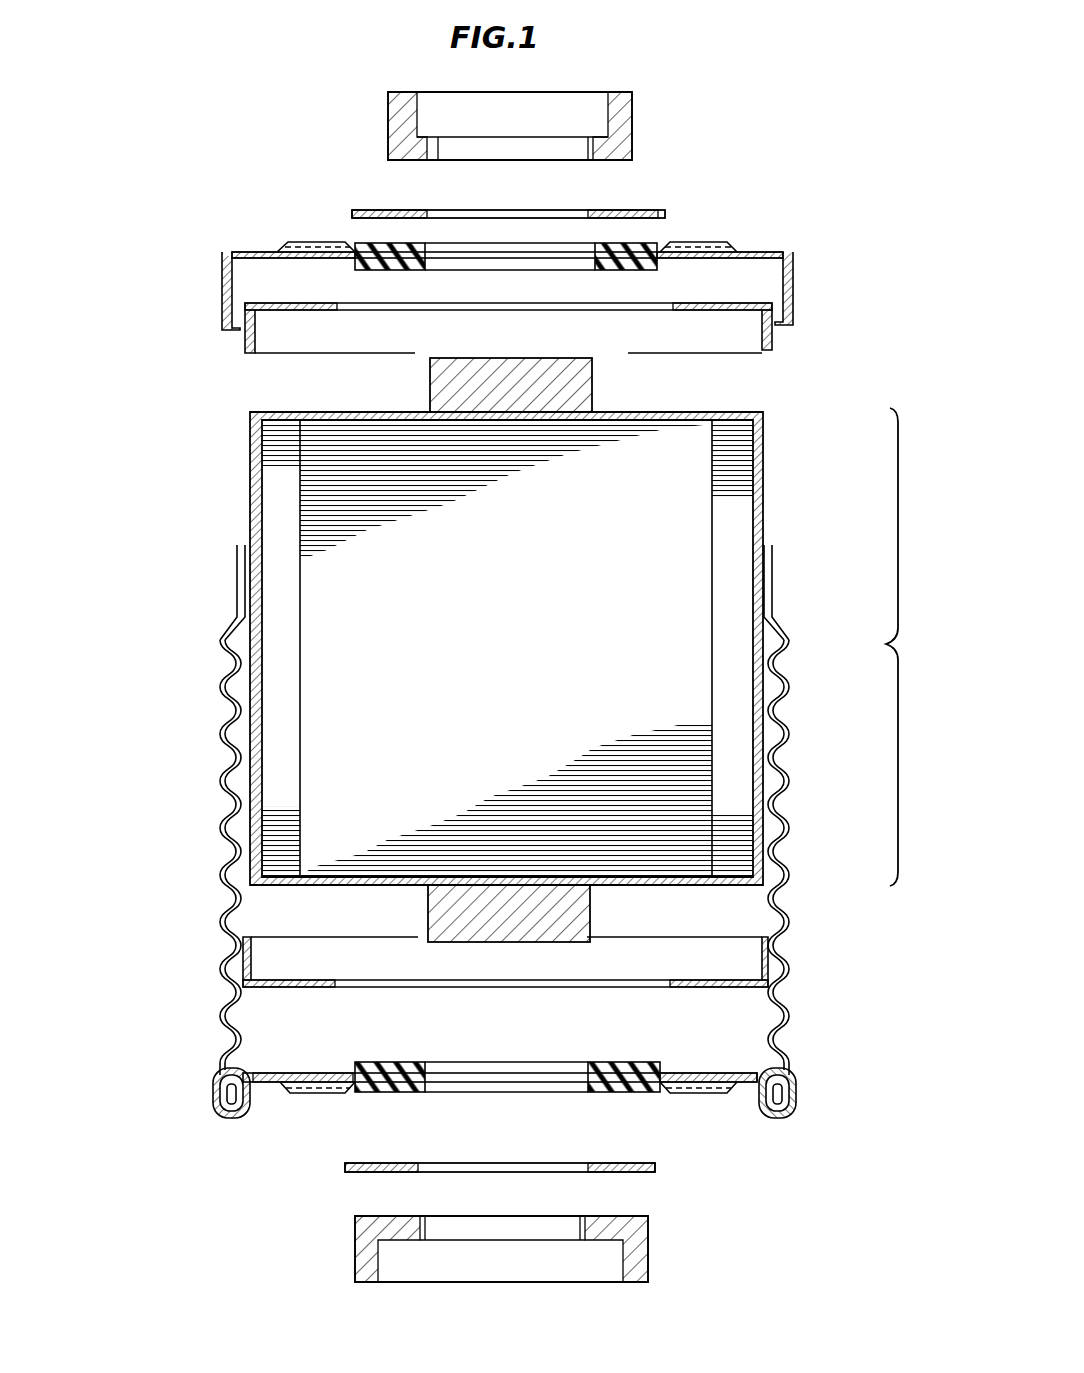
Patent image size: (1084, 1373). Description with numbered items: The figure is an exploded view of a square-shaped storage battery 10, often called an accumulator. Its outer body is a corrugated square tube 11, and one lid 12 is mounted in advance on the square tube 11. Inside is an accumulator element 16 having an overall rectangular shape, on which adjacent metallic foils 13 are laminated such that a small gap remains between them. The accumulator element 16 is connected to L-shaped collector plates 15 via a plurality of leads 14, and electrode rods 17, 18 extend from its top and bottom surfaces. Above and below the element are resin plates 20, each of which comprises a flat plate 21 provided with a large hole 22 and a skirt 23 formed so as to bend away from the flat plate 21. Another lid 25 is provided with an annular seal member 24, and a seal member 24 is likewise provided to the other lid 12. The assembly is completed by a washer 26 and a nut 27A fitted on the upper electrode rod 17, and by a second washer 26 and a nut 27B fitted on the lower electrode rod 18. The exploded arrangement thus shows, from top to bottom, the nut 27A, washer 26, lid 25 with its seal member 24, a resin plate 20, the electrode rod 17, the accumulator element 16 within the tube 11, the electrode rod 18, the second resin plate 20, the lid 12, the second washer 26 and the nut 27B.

The square-shaped storage battery 10 is at (140, 588).
The corrugated square tube 11 is at (220, 830).
The lid 12 is at (272, 1082).
The metallic foils 13 is at (417, 500).
The leads 14 is at (285, 470).
The L-shaped collector plates 15 is at (315, 412).
The accumulator element 16 is at (914, 647).
The electrode rod 17 is at (597, 372).
The electrode rod 18 is at (427, 930).
The resin plate 20 is at (564, 657).
The flat plate 21 is at (723, 305).
The hole 22 is at (672, 308).
The skirt 23 is at (765, 326).
The annular seal member 24 is at (598, 262).
The lid 25 is at (782, 246).
The washer 26 is at (665, 212).
The nut 27A is at (623, 135).
The nut 27B is at (643, 1248).